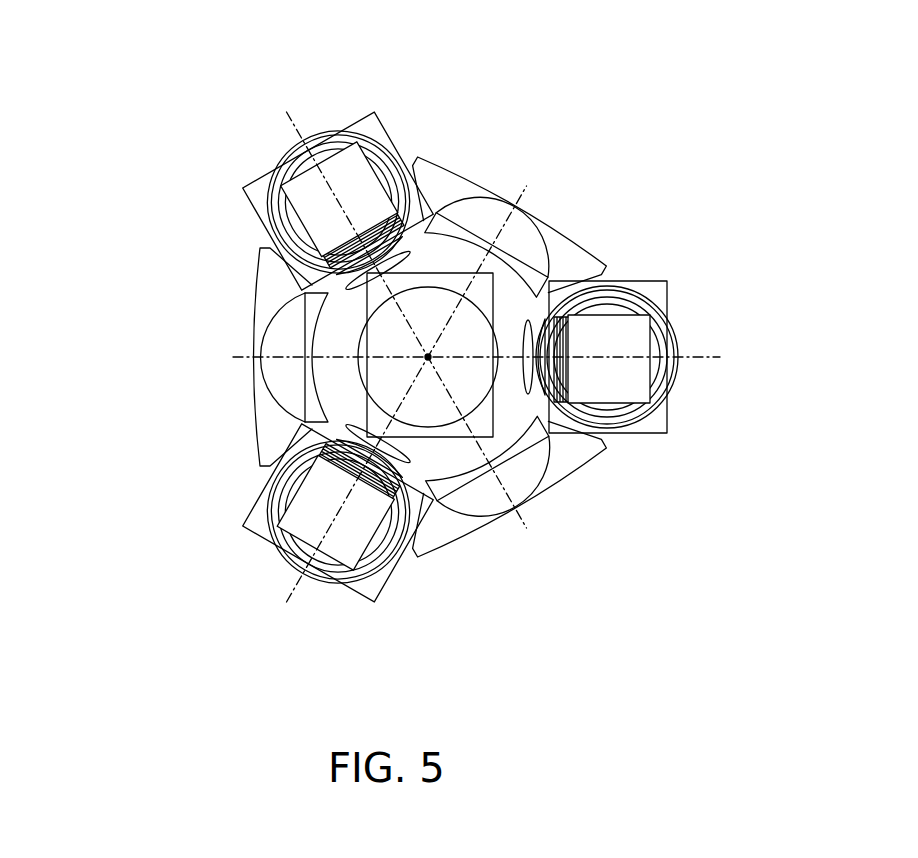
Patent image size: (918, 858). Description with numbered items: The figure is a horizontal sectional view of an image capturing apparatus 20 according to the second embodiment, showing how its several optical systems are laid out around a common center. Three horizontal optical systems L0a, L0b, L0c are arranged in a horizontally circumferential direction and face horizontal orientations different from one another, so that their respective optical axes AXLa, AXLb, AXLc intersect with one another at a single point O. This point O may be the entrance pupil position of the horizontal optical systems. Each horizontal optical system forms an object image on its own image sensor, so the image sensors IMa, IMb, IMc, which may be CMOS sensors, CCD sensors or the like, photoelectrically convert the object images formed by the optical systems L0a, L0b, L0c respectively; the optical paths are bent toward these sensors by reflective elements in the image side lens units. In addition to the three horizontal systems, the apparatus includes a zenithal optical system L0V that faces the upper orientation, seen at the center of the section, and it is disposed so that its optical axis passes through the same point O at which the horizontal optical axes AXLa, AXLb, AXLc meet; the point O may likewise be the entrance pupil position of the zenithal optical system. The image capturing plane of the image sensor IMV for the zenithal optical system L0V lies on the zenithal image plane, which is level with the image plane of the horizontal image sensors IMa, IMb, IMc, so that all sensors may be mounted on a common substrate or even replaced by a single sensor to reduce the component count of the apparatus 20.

The image capturing apparatus 20 is at (390, 315).
The image sensor IMa is at (662, 413).
The image sensor IMb is at (367, 587).
The image sensor IMc is at (363, 127).
The image sensor IMV is at (484, 290).
The optical system L0a is at (235, 345).
The optical system L0b is at (510, 183).
The optical system L0c is at (510, 528).
The zenithal optical system L0V is at (463, 322).
The optical axis AXLa is at (293, 360).
The optical axis AXLb is at (480, 272).
The optical axis AXLc is at (486, 450).
The point O is at (444, 344).